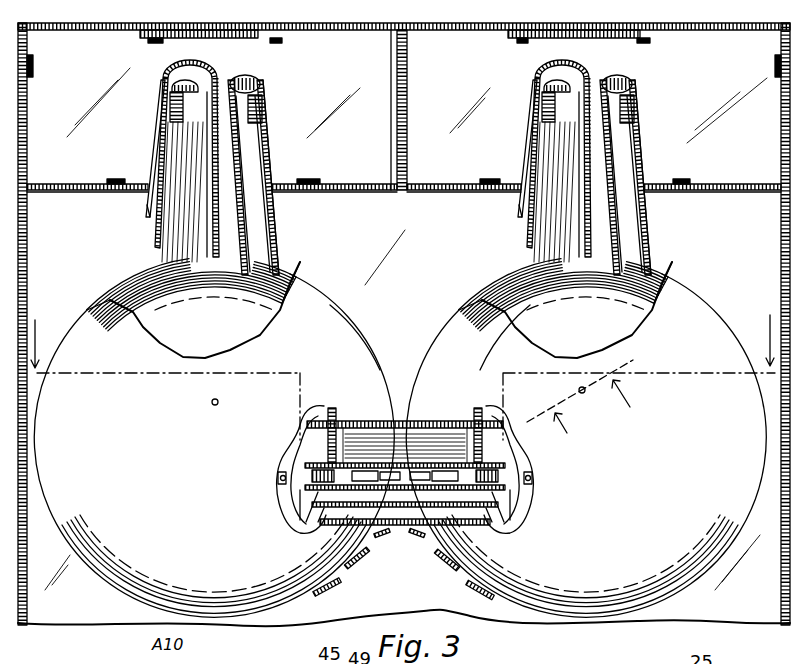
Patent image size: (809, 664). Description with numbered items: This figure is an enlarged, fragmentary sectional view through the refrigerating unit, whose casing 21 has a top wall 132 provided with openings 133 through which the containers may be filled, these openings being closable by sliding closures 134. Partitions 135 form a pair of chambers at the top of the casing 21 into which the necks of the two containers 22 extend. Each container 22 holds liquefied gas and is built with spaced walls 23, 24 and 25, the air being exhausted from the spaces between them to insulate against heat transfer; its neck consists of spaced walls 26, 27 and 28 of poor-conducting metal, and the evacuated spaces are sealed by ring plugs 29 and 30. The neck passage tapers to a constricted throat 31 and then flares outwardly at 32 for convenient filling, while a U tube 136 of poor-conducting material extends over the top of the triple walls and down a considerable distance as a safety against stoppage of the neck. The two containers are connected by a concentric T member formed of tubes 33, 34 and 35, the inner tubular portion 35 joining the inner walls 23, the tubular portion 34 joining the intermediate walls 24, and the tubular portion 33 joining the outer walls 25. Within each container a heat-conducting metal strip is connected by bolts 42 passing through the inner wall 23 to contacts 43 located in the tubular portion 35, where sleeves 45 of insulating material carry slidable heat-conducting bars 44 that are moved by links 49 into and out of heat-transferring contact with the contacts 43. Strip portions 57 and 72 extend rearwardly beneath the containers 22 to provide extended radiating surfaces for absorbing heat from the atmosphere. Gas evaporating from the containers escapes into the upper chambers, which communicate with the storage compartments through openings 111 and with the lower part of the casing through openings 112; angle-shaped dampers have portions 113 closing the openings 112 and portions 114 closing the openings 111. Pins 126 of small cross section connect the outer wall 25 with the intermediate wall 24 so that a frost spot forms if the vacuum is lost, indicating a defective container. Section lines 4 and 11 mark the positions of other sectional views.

The section line 4- 4 is at (401, 377).
The section line 11- 11 is at (581, 389).
The casing 21 is at (778, 256).
The container 22 is at (422, 355).
The inner wall 23 is at (281, 272).
The intermediate wall 24 is at (293, 263).
The outer wall 25 is at (307, 262).
The neck wall 26 is at (237, 152).
The neck wall 27 is at (252, 162).
The neck wall 28 is at (272, 176).
The ring plug 29 is at (259, 89).
The ring plug 30 is at (262, 109).
The constricted throat 31 is at (222, 77).
The outwardly flaring portion 32 is at (180, 73).
The outer tubular portion 33 is at (405, 468).
The intermediate tubular portion 34 is at (481, 416).
The inner tubular portion 35 is at (360, 420).
The bolt 42 is at (276, 488).
The contact 43 is at (277, 462).
The bar 44 is at (333, 420).
The sleeve 45 is at (278, 517).
The link 49 is at (378, 472).
The rearwardly extending portion 57 is at (407, 538).
The rearwardly extending portion 72 is at (337, 586).
The opening 111 is at (27, 118).
The opening 112 is at (99, 196).
The damper portion 113 is at (92, 183).
The damper portion 114 is at (27, 152).
The pin 126 is at (211, 403).
The top wall 132 is at (114, 30).
The opening 133 is at (258, 38).
The sliding closure 134 is at (220, 38).
The partition 135 is at (143, 184).
The U tube 136 is at (158, 131).